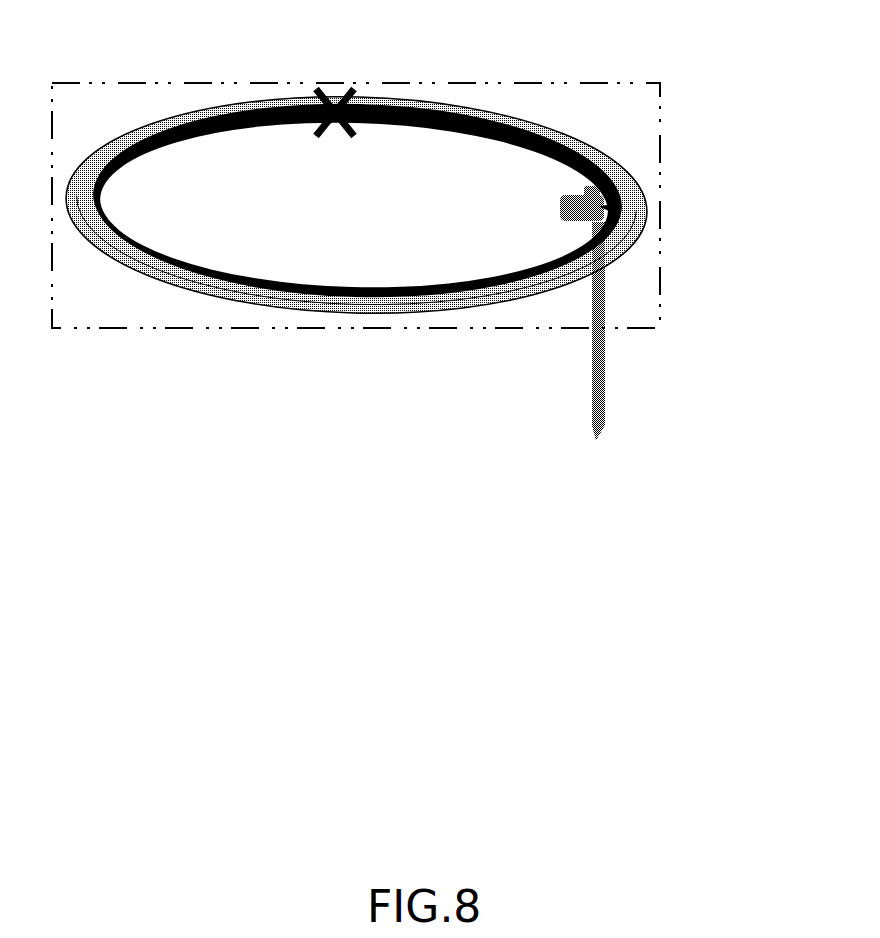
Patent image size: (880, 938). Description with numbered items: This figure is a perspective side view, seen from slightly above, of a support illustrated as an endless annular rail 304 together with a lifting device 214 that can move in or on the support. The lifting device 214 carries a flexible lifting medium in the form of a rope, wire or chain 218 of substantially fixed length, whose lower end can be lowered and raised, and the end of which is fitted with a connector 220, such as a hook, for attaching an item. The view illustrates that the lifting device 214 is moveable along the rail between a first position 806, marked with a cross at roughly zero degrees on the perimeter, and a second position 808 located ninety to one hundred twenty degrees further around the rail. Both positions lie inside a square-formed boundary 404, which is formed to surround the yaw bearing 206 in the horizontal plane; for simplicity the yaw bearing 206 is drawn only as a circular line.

The yaw bearing 206 is at (455, 103).
The lifting device 214 is at (597, 193).
The rope, wire or chain 218 is at (605, 303).
The connector 220 is at (600, 428).
The endless annular rail 304 is at (203, 122).
The boundary 404 is at (213, 330).
The first position 806 is at (331, 78).
The second position 808 is at (606, 207).